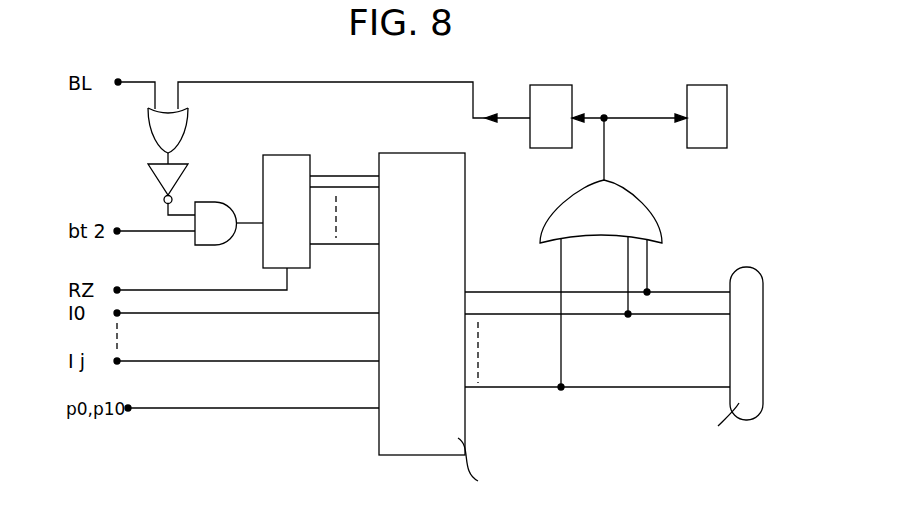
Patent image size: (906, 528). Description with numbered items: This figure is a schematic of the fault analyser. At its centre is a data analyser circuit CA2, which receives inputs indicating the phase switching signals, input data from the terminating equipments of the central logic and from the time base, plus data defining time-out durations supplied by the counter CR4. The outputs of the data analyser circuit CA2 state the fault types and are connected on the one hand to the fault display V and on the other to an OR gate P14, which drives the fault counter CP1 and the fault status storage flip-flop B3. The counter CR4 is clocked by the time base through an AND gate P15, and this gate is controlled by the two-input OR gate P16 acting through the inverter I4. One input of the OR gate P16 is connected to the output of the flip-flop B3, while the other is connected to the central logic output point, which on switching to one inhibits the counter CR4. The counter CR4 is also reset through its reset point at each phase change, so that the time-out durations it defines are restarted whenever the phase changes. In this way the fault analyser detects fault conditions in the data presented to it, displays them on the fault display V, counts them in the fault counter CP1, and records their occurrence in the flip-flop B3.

The two-input OR gate P16 is at (152, 121).
The inverter I4 is at (177, 175).
The AND gate P15 is at (212, 244).
The counter CR4 is at (291, 158).
The data analyser circuit CA2 is at (457, 192).
The fault status storage flip-flop B3 is at (565, 98).
The fault counter CP1 is at (723, 102).
The OR gate P14 is at (632, 208).
The fault display V is at (753, 295).